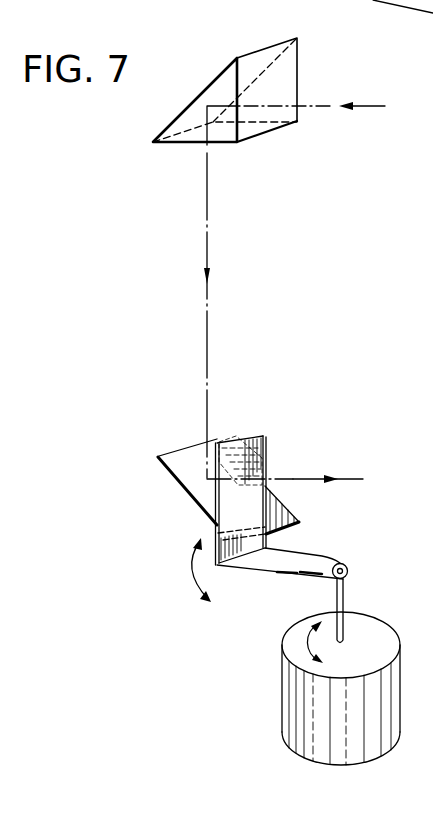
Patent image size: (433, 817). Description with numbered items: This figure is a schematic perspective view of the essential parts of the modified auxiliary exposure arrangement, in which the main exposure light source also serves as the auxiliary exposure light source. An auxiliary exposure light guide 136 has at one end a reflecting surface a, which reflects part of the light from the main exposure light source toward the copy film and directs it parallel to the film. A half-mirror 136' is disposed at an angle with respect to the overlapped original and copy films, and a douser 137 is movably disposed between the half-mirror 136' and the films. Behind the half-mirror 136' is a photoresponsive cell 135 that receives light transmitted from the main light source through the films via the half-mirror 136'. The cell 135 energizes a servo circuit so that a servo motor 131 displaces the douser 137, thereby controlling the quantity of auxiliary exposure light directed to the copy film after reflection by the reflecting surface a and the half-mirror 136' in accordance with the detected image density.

The auxiliary exposure light guide 136 is at (195, 90).
The reflecting surface a is at (255, 62).
The photoresponsive cell 135 is at (222, 442).
The half-mirror 136' is at (204, 489).
The douser 137 is at (228, 503).
The servo motor 131 is at (290, 693).